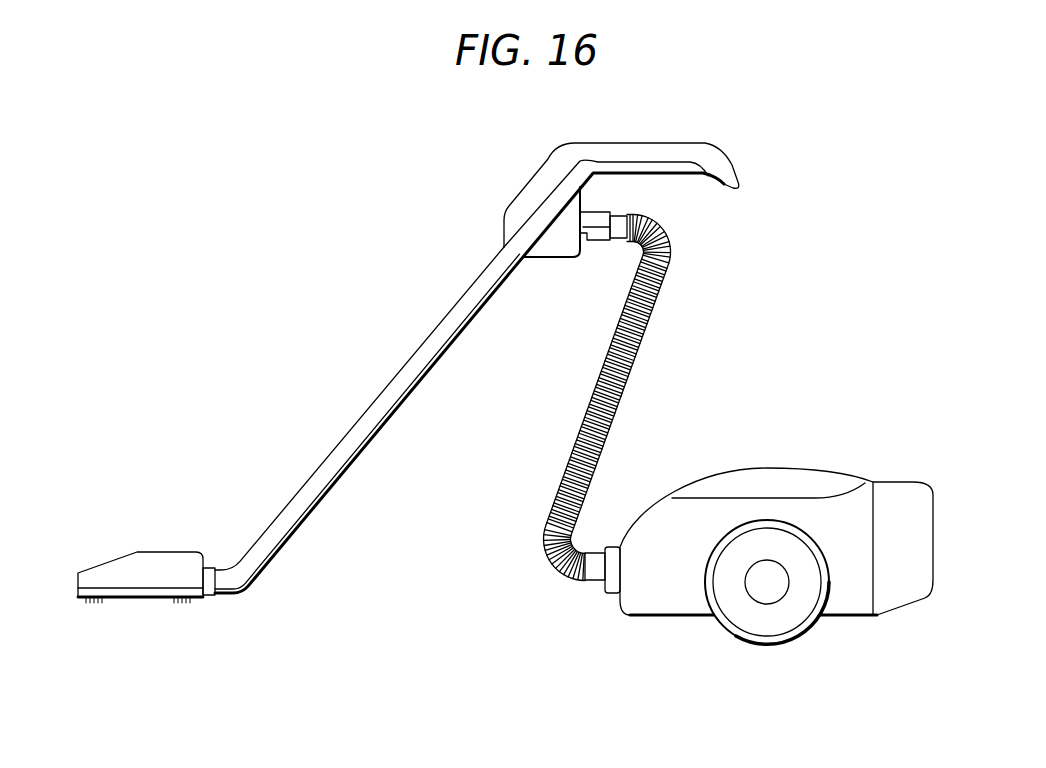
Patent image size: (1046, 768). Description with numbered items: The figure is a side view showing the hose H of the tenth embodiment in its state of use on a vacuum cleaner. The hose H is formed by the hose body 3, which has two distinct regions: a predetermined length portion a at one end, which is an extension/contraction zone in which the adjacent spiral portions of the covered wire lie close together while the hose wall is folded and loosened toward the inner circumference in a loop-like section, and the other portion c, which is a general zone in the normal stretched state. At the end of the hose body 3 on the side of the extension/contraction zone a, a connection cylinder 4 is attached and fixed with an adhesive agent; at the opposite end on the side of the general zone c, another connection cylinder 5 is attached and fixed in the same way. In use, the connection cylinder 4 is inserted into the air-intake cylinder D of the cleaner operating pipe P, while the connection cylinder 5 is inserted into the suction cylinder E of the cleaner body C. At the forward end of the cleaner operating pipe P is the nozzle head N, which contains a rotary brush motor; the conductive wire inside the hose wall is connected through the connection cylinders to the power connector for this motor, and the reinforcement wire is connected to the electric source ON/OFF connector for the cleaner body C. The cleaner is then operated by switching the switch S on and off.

The switch S is at (540, 172).
The cleaner operating pipe P is at (402, 370).
The nozzle head N is at (176, 558).
The air-intake cylinder D is at (592, 243).
The connection cylinder 4 is at (618, 241).
The extension/contraction zone a is at (635, 398).
The general zone c is at (634, 398).
The hose body 3 is at (635, 398).
The hose H is at (653, 370).
The cleaner body C is at (814, 437).
The connection cylinder 5 is at (595, 572).
The suction cylinder E is at (610, 583).